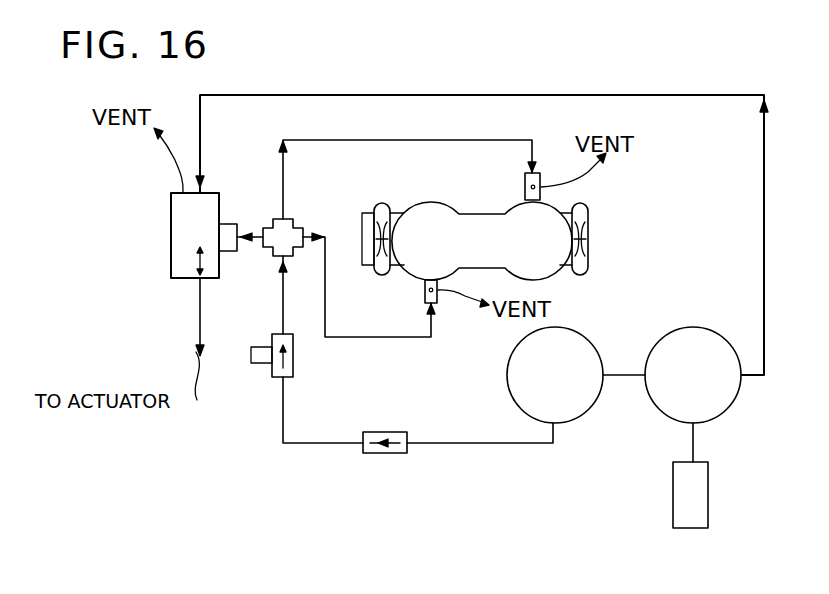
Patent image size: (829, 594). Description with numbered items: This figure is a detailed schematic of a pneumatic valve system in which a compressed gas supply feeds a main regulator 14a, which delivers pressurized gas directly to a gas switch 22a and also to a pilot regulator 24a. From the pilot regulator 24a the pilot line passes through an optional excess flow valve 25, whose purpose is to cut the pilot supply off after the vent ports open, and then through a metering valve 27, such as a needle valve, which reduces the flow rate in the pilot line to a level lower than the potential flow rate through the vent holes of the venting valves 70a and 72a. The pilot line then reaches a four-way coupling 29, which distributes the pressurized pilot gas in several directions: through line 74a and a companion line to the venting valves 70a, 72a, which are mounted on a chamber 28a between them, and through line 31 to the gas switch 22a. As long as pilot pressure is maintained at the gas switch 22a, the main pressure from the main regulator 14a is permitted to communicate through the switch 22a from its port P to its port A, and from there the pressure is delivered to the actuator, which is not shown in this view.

The gas switch 22a is at (171, 228).
The line 31 is at (258, 226).
The four-way coupling 29 is at (270, 256).
The line 74a is at (480, 138).
The pressure chamber 28a is at (433, 189).
The venting valve 70a is at (525, 186).
The venting valve 72a is at (425, 290).
The metering valve 27 is at (293, 357).
The excess flow valve 25 is at (379, 453).
The pilot regulator 24a is at (507, 375).
The main regulator 14a is at (697, 327).